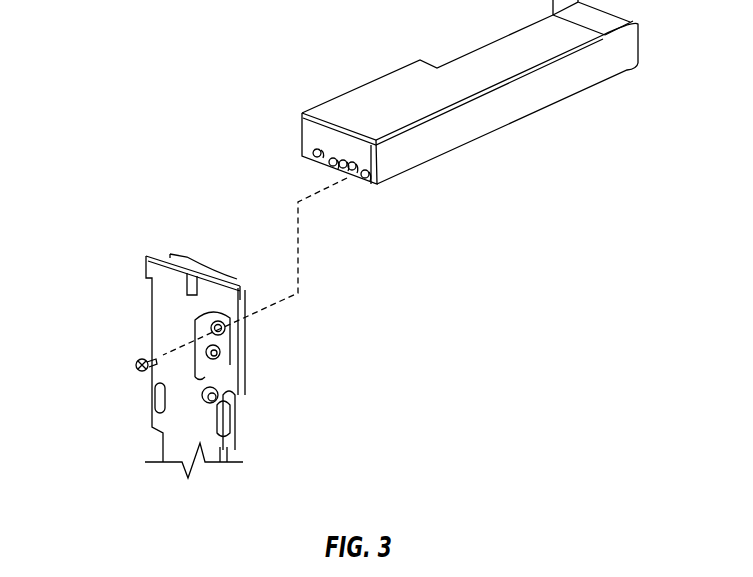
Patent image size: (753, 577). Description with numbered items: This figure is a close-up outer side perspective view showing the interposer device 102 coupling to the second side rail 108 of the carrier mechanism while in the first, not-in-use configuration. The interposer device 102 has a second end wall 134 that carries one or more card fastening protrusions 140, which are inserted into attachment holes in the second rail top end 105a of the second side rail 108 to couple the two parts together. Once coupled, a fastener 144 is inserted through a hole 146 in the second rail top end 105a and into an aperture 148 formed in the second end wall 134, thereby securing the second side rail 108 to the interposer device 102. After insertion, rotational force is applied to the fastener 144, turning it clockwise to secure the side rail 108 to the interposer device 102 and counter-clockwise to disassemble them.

The interposer device 102 is at (357, 61).
The second end wall 134 is at (305, 131).
The card fastening protrusions 140 is at (330, 164).
The aperture 148 is at (369, 179).
The second rail top end 105a is at (141, 254).
The fastener 144 is at (140, 358).
The hole 146 is at (245, 338).
The second side rail 108 is at (173, 448).